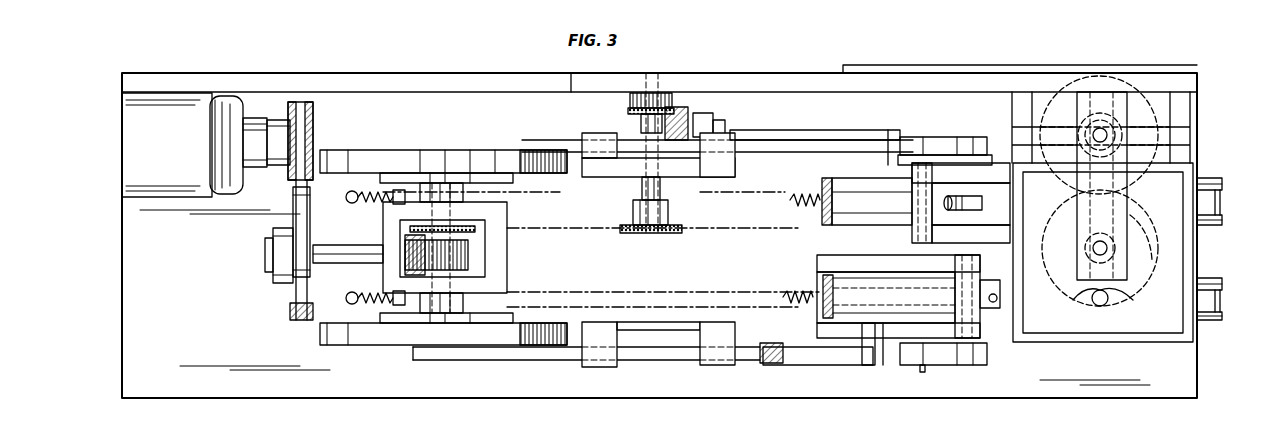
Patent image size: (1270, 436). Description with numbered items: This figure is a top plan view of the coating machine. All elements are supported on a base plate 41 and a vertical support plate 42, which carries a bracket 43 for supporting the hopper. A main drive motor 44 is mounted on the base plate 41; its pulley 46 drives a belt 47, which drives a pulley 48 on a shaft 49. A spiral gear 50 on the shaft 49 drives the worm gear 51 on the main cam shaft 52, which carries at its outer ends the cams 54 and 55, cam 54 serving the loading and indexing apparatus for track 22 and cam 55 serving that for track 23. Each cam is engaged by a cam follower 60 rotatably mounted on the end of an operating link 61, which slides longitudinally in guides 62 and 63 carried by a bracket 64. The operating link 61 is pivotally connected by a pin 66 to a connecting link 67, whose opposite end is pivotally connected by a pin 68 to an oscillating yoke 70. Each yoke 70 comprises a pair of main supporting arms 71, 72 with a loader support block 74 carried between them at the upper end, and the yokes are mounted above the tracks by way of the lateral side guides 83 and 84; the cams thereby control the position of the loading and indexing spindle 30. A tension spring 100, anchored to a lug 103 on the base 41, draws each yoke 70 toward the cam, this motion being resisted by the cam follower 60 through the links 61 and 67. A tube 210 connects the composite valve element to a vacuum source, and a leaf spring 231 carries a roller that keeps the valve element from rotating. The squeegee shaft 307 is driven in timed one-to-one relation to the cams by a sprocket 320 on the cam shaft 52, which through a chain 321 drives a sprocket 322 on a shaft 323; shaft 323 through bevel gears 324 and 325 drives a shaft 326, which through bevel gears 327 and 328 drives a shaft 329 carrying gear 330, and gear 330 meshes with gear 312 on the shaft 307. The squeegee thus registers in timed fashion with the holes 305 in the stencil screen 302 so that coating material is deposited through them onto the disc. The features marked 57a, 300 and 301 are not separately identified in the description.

The base plate 41 is at (204, 333).
The vertical support plate 42 is at (368, 82).
The bracket 43 is at (917, 72).
The main drive motor 44 is at (178, 100).
The pulley 46 is at (313, 106).
The belt 47 is at (301, 150).
The pulley 48 is at (310, 203).
The shaft 49 is at (352, 250).
The lug 103 is at (353, 203).
The guide pin 57a is at (340, 160).
The cam 55 is at (398, 150).
The cam 54 is at (383, 340).
The cam follower 60 is at (520, 150).
The main cam shaft 52 is at (452, 193).
The spiral gear 50 is at (445, 247).
The sprocket 320 is at (470, 226).
The worm gear 51 is at (468, 256).
The chain 321 is at (563, 226).
The bevel gear 324 is at (648, 92).
The bevel gear 325 is at (690, 116).
The operating link 61 is at (553, 140).
The guide 62 is at (590, 140).
The bracket 64 is at (718, 178).
The guide 63 is at (736, 135).
The shaft 326 is at (845, 130).
The shaft 323 is at (661, 185).
The sprocket 322 is at (660, 234).
The tube 210 is at (928, 136).
The leaf spring 231 is at (888, 140).
The tension spring 100 is at (957, 137).
The yoke 70 is at (822, 172).
The main supporting arm 72 is at (912, 169).
The loader support block 74 is at (920, 204).
The main supporting arm 71 is at (918, 233).
The loading and indexing spindle 30 is at (983, 203).
The pin 66 is at (773, 343).
The connecting link 67 is at (818, 365).
The pin 68 is at (864, 366).
The bevel gear 328 is at (1108, 110).
The gear 330 is at (1062, 92).
The shaft 329 is at (1100, 128).
The bevel gear 327 is at (1140, 92).
The housing 300 is at (1066, 342).
The housing inner wall 301 is at (1112, 333).
The screen 302 is at (1058, 312).
The squeegee shaft 307 is at (1095, 246).
The gear 312 is at (1142, 228).
The hole 305 is at (1108, 302).
The track 23 is at (1202, 170).
The track 22 is at (1202, 295).
The lateral side guide 84 is at (1222, 185).
The lateral side guide 83 is at (1222, 221).